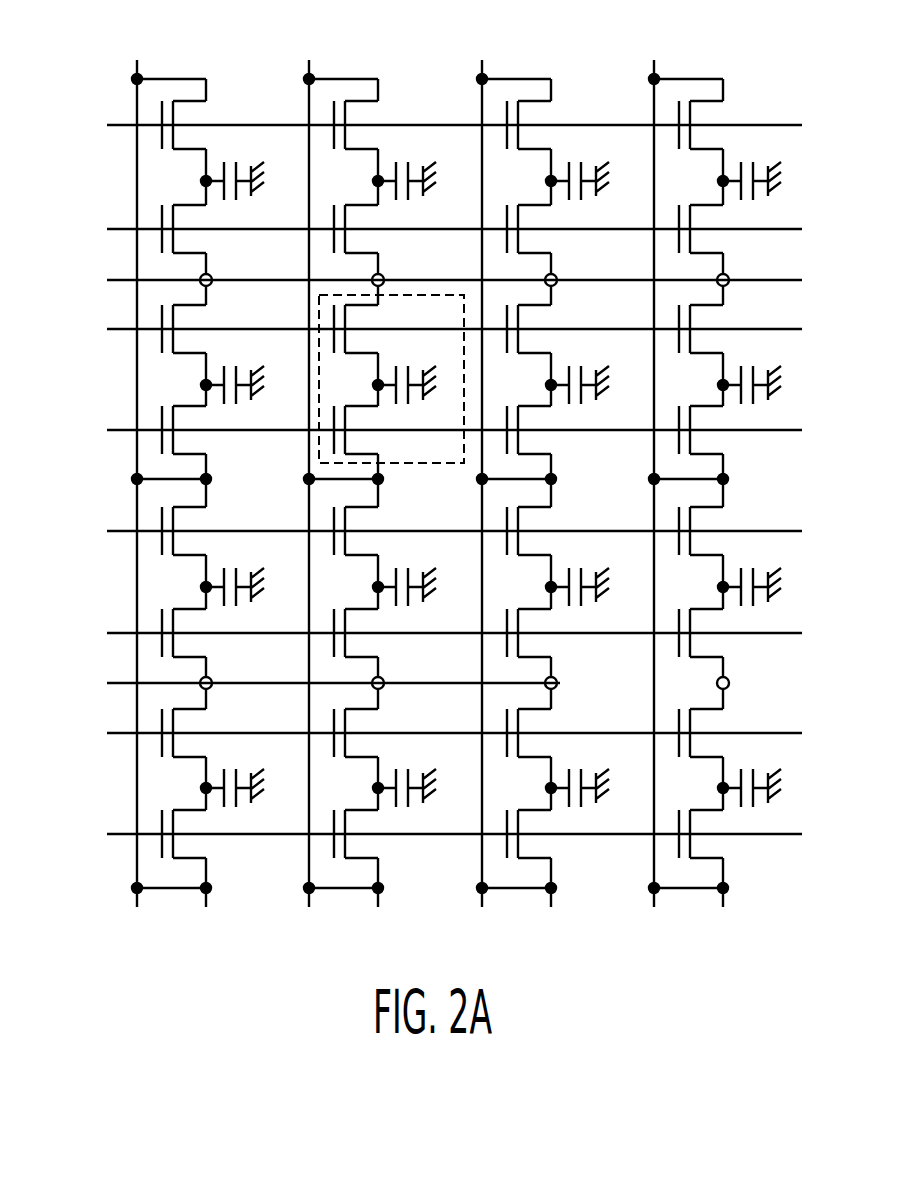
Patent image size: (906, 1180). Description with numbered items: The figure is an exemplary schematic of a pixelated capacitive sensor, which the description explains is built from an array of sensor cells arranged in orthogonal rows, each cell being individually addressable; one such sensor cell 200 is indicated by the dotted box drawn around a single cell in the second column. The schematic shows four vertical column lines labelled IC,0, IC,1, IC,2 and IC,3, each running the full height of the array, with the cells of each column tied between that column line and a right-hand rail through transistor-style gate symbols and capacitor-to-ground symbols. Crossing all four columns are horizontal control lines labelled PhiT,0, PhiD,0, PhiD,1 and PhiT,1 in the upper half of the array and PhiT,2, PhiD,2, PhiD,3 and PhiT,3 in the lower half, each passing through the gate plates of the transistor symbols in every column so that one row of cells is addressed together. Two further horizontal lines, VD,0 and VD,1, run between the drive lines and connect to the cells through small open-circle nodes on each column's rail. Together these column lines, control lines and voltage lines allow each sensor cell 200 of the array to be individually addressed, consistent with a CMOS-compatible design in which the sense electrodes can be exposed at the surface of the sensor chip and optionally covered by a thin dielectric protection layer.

The sensor cell 200 is at (398, 467).
The column current line 0 IC,0 is at (135, 461).
The column current line 1 IC,1 is at (307, 461).
The column current line 2 IC,2 is at (480, 461).
The column current line 3 IC,3 is at (652, 461).
The transfer gate line T,0 PhiT,0 is at (427, 119).
The drive gate line D,0 PhiD,0 is at (427, 223).
The drive gate line D,1 PhiD,1 is at (427, 323).
The transfer gate line T,1 PhiT,1 is at (427, 424).
The transfer gate line T,2 PhiT,2 is at (427, 525).
The drive gate line D,2 PhiD,2 is at (427, 627).
The drive gate line D,3 PhiD,3 is at (427, 727).
The transfer gate line T,3 PhiT,3 is at (427, 828).
The drain voltage line D,0 VD,0 is at (427, 274).
The drain voltage line D,1 VD,1 is at (306, 677).